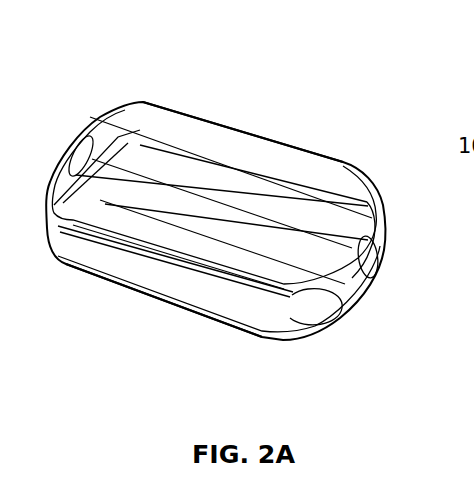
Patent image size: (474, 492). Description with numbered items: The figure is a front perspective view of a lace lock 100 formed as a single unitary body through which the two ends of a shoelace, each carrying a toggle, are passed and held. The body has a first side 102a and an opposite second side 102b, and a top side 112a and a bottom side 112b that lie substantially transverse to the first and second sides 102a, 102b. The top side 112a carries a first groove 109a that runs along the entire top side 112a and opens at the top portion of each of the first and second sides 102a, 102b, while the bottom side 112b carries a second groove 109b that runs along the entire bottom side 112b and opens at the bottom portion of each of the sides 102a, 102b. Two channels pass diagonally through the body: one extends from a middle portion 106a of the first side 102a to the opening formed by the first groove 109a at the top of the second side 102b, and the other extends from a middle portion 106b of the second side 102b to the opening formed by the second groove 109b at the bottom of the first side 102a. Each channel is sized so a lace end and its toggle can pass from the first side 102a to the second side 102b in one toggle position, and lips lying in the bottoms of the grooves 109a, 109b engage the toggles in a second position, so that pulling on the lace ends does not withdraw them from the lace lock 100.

The lace lock 100 is at (117, 32).
The first side 102a is at (85, 127).
The second side 102b is at (381, 222).
The middle portion of the first side 106a is at (68, 177).
The middle portion of the second side 106b is at (374, 267).
The first groove 109a is at (204, 122).
The second groove 109b is at (273, 317).
The top side 112a is at (269, 137).
The bottom side 112b is at (150, 280).